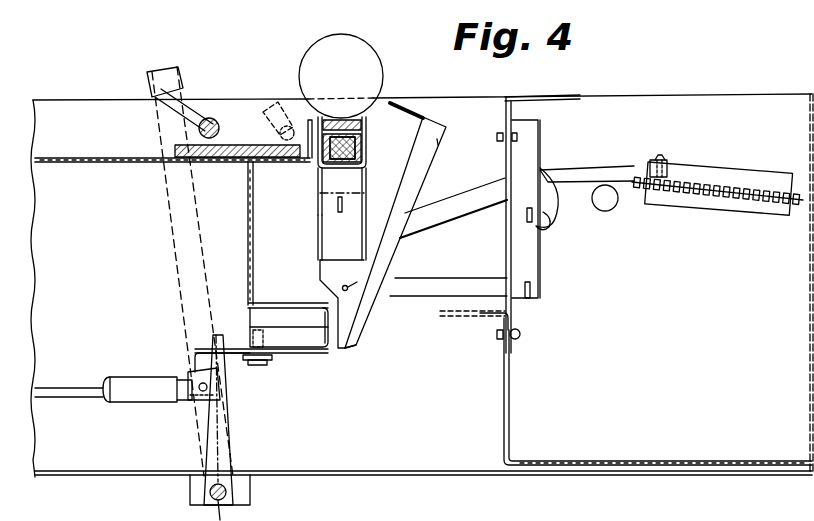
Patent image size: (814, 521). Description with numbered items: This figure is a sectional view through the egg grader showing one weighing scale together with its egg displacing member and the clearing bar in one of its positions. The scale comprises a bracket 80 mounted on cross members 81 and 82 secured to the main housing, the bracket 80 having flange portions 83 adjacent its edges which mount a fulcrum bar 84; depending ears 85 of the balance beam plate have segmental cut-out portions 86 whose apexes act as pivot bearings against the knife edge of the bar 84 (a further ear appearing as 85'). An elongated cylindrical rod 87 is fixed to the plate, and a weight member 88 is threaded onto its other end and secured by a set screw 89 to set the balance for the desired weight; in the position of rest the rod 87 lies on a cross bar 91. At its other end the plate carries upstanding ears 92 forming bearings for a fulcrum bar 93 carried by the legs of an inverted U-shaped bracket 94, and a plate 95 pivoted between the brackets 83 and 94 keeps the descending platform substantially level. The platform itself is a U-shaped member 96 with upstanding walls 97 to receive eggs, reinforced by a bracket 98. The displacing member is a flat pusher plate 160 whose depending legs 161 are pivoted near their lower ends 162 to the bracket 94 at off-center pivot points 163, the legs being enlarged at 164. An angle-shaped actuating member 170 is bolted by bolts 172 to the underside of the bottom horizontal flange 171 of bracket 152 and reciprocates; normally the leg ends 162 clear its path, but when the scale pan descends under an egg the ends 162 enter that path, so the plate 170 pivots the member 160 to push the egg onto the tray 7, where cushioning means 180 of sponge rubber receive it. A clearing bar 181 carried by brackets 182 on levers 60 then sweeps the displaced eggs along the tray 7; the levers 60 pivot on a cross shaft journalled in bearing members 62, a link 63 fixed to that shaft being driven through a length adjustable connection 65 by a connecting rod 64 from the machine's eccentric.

The tray 7 is at (77, 138).
The clearing bar lever 60 is at (173, 272).
The bearing member 62 is at (241, 493).
The link 63 is at (216, 413).
The connecting rod 64 is at (78, 386).
The length adjustable connection 65 is at (164, 376).
The bracket 80 is at (515, 315).
The cross member 81 is at (509, 420).
The cross member 82 is at (511, 112).
The flange portion 83 is at (538, 266).
The fulcrum bar 84 is at (527, 218).
The depending ear 85 is at (453, 206).
The hook 85' is at (561, 224).
The segmental cut-out portion 86 is at (552, 235).
The rod 87 is at (583, 170).
The weight member 88 is at (737, 171).
The set screw 89 is at (665, 160).
The cross bar 91 is at (613, 204).
The upstanding ear 92 is at (368, 226).
The fulcrum bar 93 is at (342, 212).
The inverted U-shaped bracket 94 is at (320, 247).
The plate 95 is at (476, 277).
The balance platform member 96 is at (366, 141).
The upstanding wall 97 is at (366, 127).
The reinforcing bracket 98 is at (317, 186).
The bracket 152 is at (248, 209).
The pusher plate 160 is at (408, 106).
The depending leg 161 is at (437, 142).
The lower end 162 is at (346, 340).
The pivot point 163 is at (352, 278).
The enlargement 164 is at (327, 283).
The actuating member 170 is at (298, 355).
The bottom horizontal flange 171 is at (283, 294).
The bolt 172 is at (274, 360).
The cushioning means 180 is at (252, 137).
The clearing bar 181 is at (213, 119).
The bracket 182 is at (148, 88).